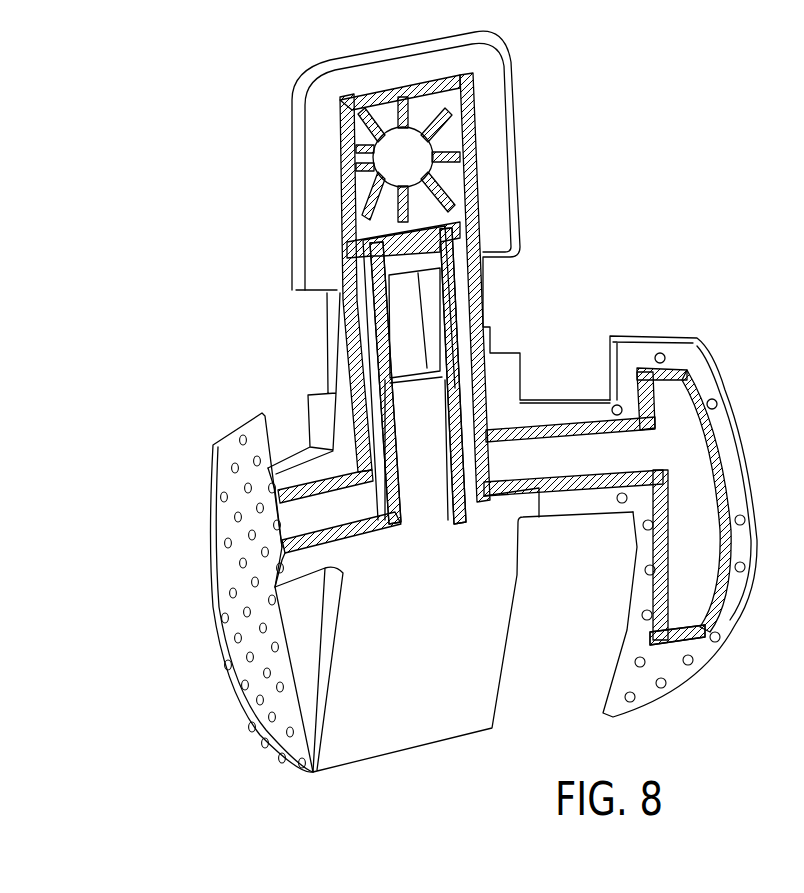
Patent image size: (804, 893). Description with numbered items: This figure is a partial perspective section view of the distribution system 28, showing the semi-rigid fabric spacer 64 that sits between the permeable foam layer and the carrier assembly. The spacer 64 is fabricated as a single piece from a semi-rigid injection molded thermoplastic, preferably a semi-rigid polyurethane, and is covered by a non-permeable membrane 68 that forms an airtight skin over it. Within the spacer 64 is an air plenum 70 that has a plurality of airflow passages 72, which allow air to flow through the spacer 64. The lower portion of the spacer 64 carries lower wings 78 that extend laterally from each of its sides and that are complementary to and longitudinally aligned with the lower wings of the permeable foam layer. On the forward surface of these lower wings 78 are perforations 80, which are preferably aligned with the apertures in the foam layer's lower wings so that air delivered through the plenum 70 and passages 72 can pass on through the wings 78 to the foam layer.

The distribution system 28 is at (350, 743).
The semi-rigid fabric spacer 64 is at (463, 720).
The non-permeable membrane 68 is at (700, 643).
The air plenum 70 is at (410, 158).
The airflow passages 72 is at (450, 217).
The lower wings 78 is at (232, 650).
The perforations 80 is at (710, 399).